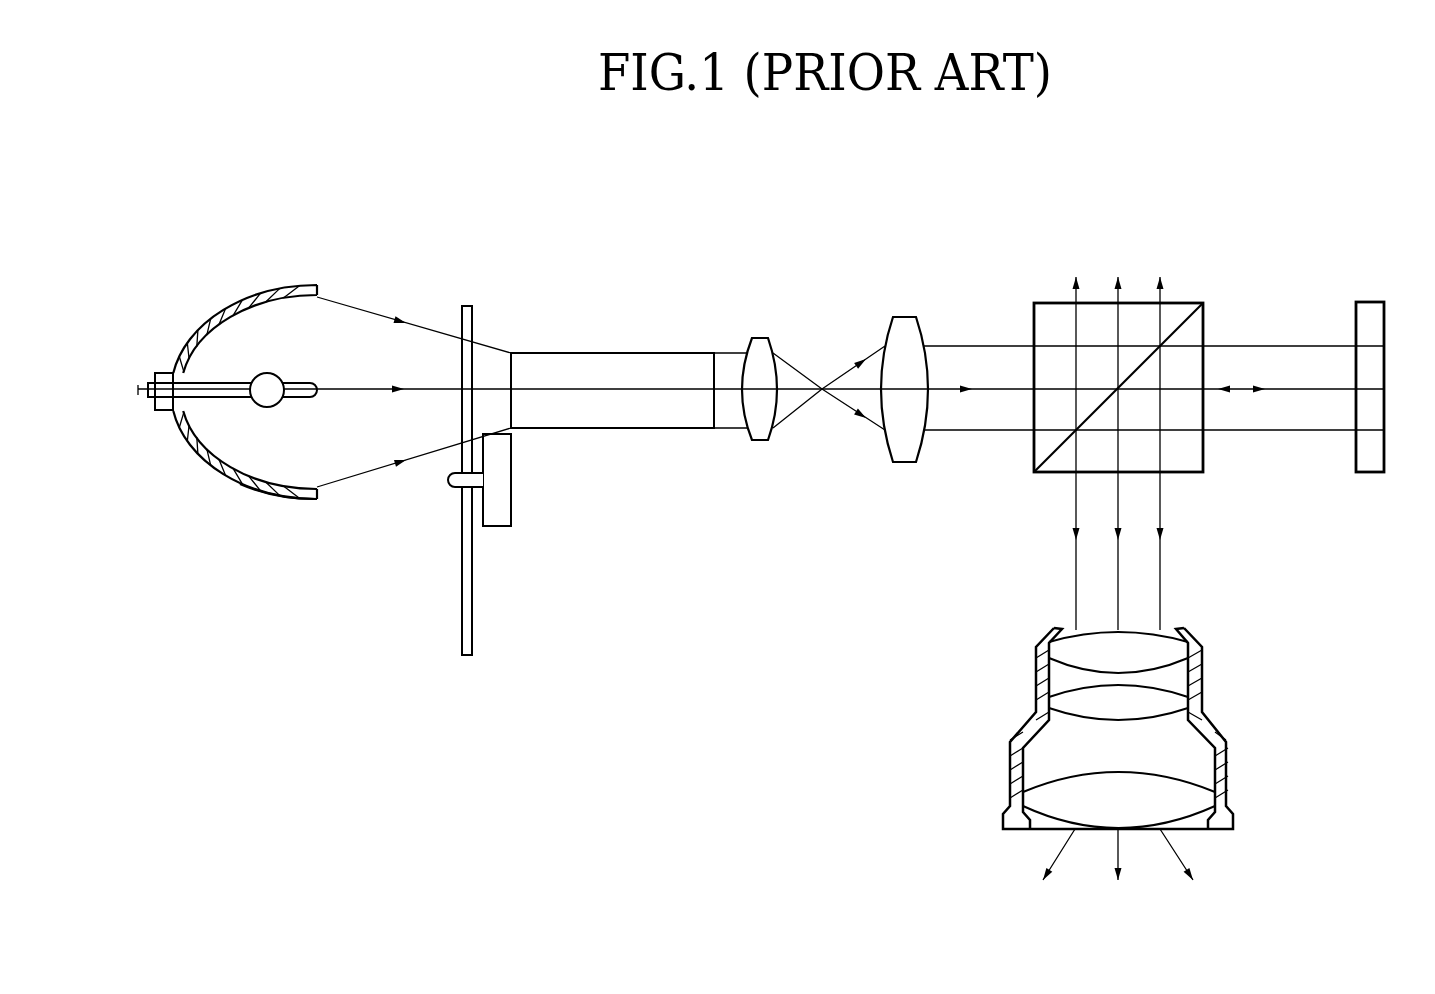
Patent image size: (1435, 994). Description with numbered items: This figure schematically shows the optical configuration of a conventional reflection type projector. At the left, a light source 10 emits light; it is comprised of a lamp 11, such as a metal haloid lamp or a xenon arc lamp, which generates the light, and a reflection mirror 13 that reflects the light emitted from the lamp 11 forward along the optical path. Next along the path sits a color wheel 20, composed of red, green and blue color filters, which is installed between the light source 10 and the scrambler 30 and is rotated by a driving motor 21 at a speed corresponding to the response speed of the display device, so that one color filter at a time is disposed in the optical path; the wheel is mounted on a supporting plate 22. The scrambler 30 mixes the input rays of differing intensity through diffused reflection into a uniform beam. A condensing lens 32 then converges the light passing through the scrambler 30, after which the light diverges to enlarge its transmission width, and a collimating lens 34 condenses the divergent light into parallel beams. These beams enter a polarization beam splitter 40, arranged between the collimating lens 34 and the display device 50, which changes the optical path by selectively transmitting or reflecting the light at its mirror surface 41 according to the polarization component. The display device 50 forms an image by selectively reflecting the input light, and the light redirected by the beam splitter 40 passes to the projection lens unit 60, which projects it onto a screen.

The light source 10 is at (311, 275).
The lamp 11 is at (281, 379).
The reflection mirror 13 is at (290, 498).
The color wheel 20 is at (464, 444).
The driving motor 21 is at (500, 520).
The support plate 22 is at (462, 598).
The scrambler 30 is at (678, 354).
The condensing lens 32 is at (760, 337).
The collimating lens 34 is at (907, 316).
The polarization beam splitter 40 is at (1148, 349).
The mirror surface 41 is at (1185, 323).
The display device 50 is at (1370, 302).
The projection lens unit 60 is at (1219, 656).